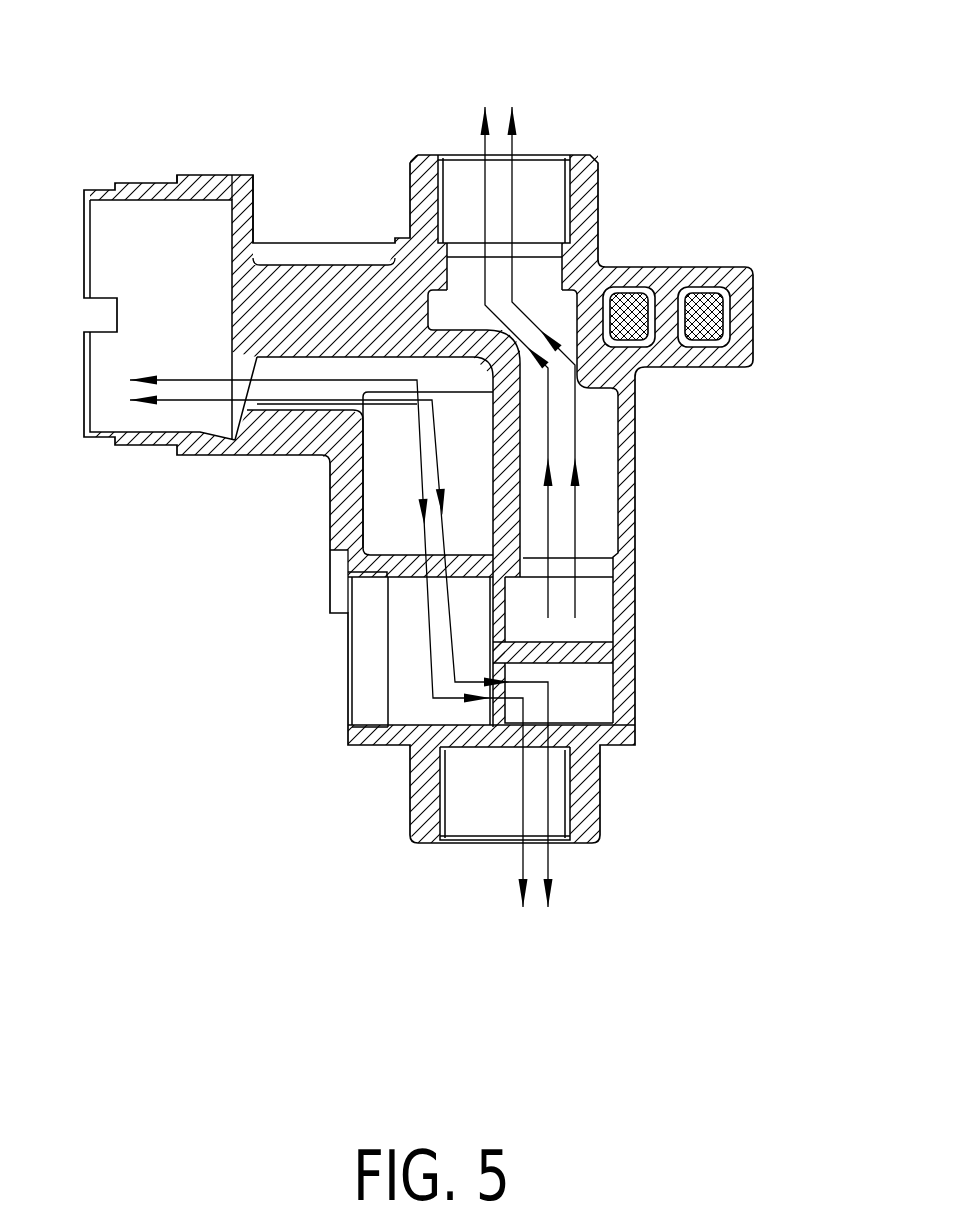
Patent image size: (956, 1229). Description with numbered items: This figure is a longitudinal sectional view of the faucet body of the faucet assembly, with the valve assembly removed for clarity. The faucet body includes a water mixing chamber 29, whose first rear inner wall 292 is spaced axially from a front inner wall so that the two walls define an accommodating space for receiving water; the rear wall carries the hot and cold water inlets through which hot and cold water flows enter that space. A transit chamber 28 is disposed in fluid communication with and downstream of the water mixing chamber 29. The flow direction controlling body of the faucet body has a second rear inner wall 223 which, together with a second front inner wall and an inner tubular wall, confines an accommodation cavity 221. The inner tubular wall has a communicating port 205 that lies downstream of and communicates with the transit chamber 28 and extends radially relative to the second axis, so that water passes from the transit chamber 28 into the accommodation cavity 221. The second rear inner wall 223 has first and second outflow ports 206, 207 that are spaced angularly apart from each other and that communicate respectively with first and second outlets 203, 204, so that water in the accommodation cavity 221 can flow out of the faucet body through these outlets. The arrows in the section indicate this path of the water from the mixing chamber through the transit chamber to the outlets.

The water mixing chamber 29 is at (152, 420).
The first rear inner wall 292 is at (238, 229).
The first outlet 203 is at (540, 168).
The transit chamber 28 is at (384, 498).
The communicating port 205 is at (437, 567).
The accommodation cavity 221 is at (403, 682).
The second rear inner wall 223 is at (492, 615).
The first outflow port 206 is at (505, 672).
The second outflow port 207 is at (500, 672).
The second outlet 204 is at (558, 820).